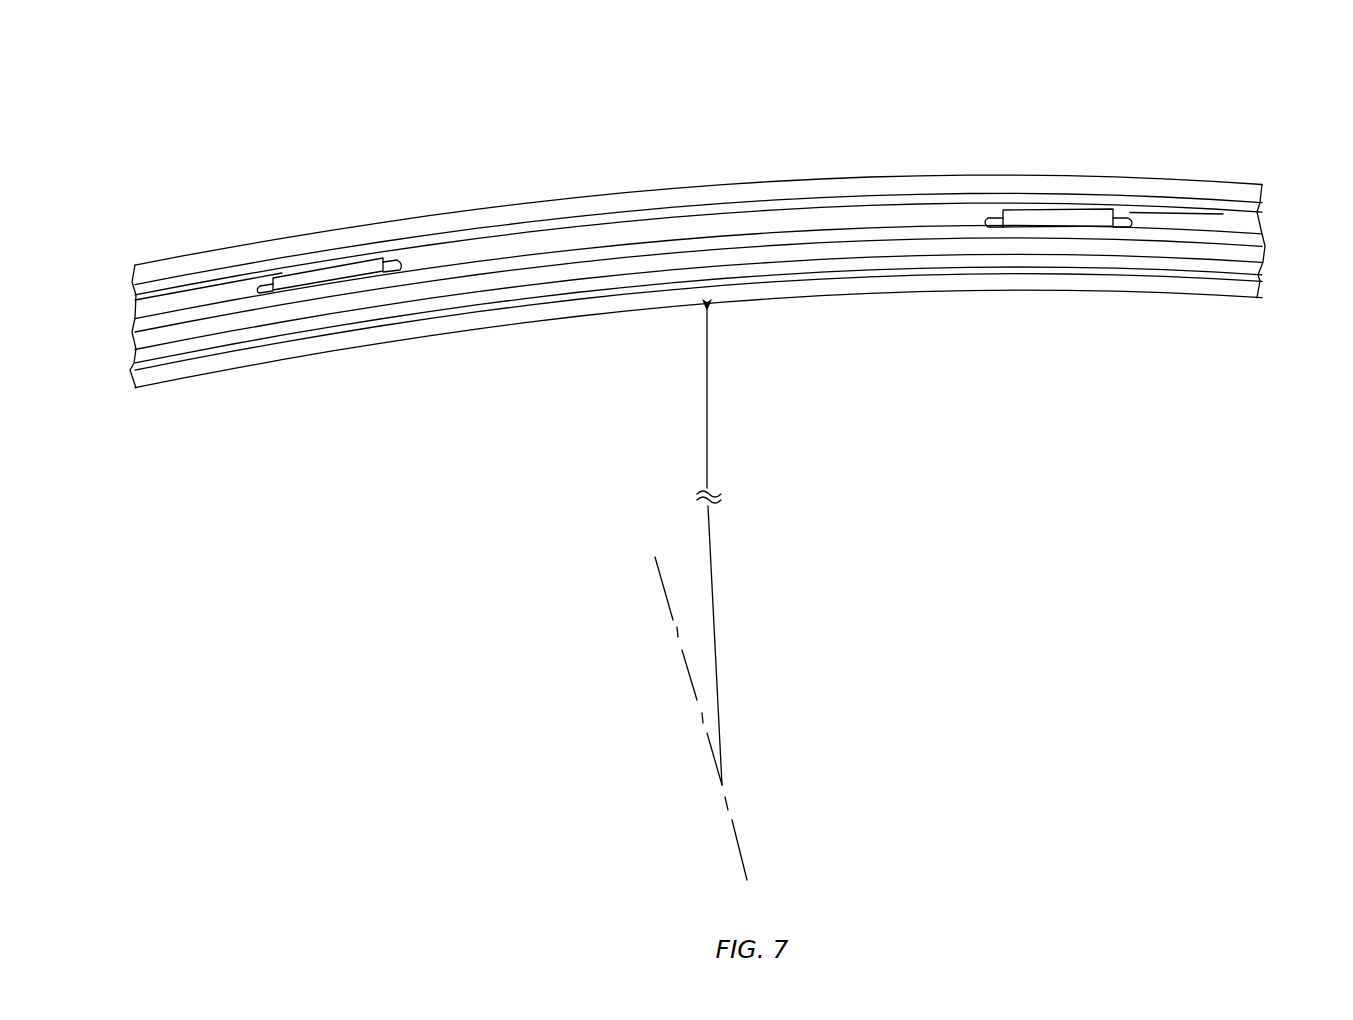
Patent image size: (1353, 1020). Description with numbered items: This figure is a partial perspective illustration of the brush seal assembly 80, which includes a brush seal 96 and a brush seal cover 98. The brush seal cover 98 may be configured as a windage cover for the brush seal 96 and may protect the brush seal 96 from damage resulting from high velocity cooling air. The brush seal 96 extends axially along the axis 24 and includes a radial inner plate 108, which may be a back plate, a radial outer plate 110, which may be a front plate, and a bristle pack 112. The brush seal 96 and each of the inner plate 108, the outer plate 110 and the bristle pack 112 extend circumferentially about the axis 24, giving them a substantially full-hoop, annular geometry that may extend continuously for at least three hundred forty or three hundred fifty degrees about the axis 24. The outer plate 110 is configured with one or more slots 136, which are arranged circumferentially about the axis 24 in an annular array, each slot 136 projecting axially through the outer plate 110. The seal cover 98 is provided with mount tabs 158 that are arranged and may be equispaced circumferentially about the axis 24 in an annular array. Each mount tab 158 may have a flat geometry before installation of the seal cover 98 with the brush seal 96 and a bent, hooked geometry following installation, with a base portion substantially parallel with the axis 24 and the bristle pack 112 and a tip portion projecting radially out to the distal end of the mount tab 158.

The brush seal assembly 80 is at (1228, 96).
The brush seal cover 98 is at (172, 250).
The radial outer plate 110 is at (1262, 232).
The bristle pack 112 is at (1276, 247).
The radial inner plate 108 is at (1260, 297).
The brush seal 96 is at (122, 393).
The mount tab 158 is at (318, 258).
The slot 136 is at (400, 258).
The axis 24 is at (741, 848).